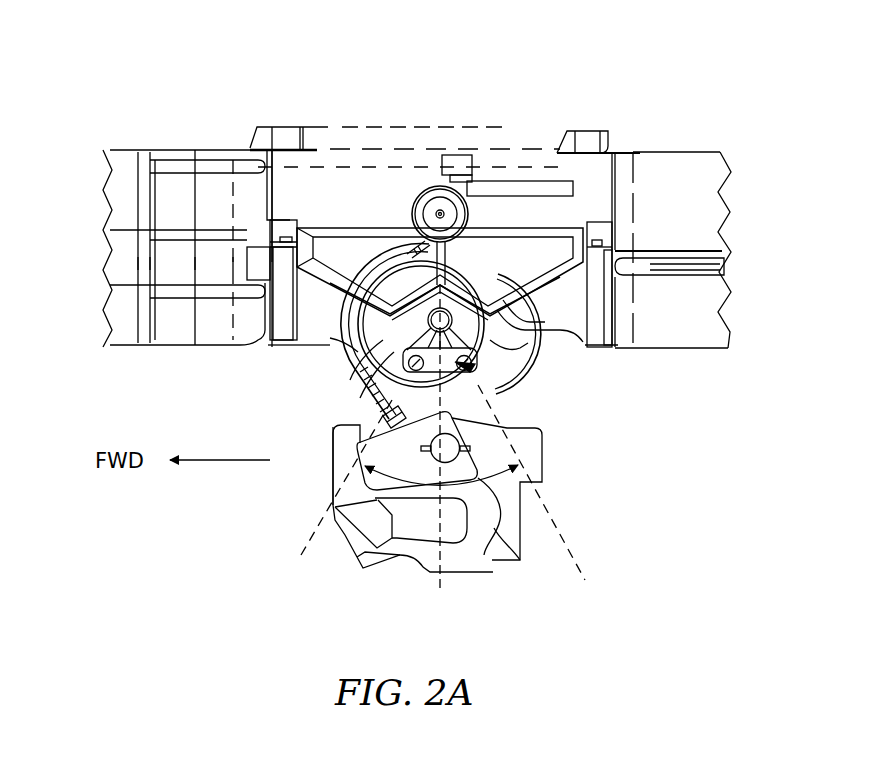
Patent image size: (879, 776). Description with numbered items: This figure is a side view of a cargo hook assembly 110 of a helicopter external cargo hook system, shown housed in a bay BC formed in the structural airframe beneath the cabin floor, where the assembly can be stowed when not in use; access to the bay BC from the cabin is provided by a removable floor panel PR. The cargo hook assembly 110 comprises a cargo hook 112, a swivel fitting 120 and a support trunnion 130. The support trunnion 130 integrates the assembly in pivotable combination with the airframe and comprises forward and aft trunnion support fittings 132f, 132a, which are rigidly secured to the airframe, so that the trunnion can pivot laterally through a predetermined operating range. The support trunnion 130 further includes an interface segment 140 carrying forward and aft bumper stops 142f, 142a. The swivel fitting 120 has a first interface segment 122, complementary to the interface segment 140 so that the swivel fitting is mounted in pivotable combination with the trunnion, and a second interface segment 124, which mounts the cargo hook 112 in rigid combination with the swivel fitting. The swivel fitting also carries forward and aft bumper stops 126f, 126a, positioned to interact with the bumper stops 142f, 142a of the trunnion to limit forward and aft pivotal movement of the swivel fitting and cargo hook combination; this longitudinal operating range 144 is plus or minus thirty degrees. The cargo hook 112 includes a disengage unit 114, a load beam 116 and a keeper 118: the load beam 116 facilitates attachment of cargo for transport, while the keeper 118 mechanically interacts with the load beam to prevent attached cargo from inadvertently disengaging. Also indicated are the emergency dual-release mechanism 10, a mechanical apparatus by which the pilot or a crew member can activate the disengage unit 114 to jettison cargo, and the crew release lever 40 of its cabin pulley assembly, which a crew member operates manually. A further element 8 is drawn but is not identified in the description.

The removable floor panel PR is at (328, 122).
The bay BC is at (622, 175).
The hose 8 is at (350, 409).
The emergency dual-release mechanism 10 is at (451, 148).
The crew release lever 40 is at (529, 173).
The cargo hook assembly 110 is at (668, 516).
The cargo hook 112 is at (553, 465).
The disengage unit 114 is at (418, 459).
The load beam 116 is at (407, 560).
The keeper 118 is at (340, 556).
The swivel fitting 120 is at (490, 373).
The first interface segment 122 is at (450, 262).
The second interface segment 124 is at (505, 409).
The aft bumper stop 126a is at (492, 362).
The forward bumper stop 126f is at (350, 386).
The support trunnion 130 is at (357, 226).
The aft trunnion support fitting 132a is at (622, 227).
The forward trunnion support fitting 132f is at (283, 228).
The interface segment 140 is at (468, 314).
The aft bumper stop 142a is at (523, 341).
The forward bumper stop 142f is at (358, 357).
The operating range for longitudinal pivotal movement 144 is at (486, 555).